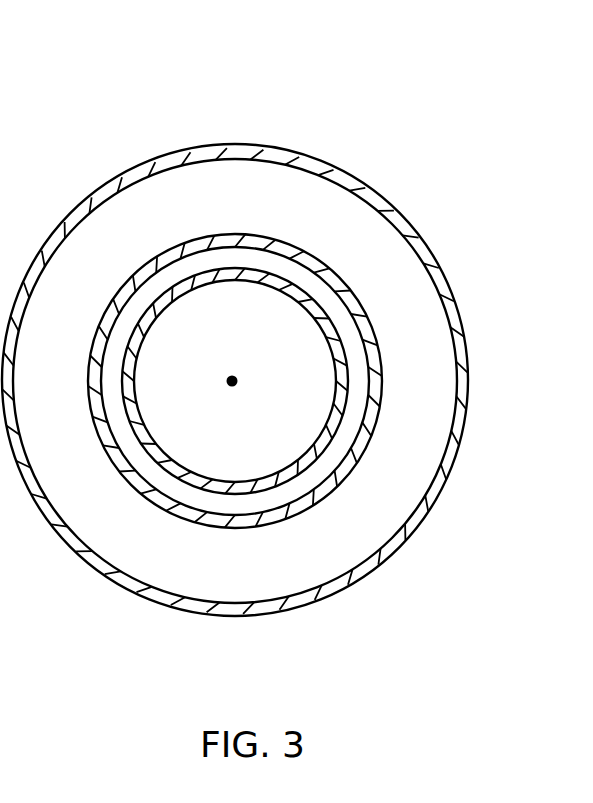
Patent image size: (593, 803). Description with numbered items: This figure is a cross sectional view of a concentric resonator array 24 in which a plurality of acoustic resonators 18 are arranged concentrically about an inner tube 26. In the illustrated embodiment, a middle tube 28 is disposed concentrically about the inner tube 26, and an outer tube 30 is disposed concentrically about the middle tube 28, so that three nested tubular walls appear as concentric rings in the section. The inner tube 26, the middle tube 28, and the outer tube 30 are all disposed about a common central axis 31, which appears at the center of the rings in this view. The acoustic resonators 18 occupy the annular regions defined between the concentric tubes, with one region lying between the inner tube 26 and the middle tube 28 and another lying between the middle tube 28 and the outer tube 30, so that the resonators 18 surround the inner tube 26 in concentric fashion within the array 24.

The concentric resonator array 24 is at (496, 115).
The outer tube 30 is at (437, 270).
The middle tube 28 is at (367, 368).
The inner tube 26 is at (342, 399).
The common central axis 31 is at (232, 381).
The acoustic resonators 18 is at (303, 204).